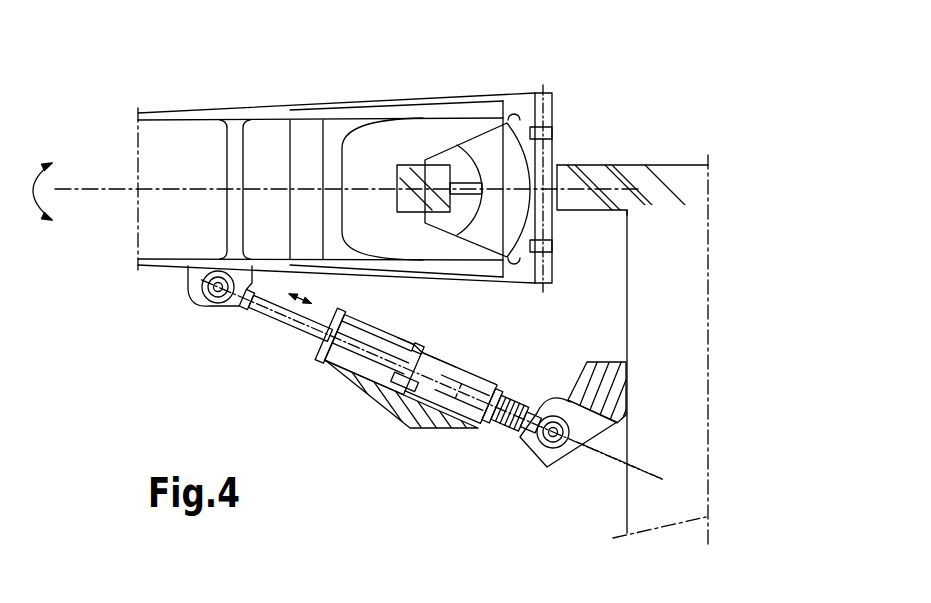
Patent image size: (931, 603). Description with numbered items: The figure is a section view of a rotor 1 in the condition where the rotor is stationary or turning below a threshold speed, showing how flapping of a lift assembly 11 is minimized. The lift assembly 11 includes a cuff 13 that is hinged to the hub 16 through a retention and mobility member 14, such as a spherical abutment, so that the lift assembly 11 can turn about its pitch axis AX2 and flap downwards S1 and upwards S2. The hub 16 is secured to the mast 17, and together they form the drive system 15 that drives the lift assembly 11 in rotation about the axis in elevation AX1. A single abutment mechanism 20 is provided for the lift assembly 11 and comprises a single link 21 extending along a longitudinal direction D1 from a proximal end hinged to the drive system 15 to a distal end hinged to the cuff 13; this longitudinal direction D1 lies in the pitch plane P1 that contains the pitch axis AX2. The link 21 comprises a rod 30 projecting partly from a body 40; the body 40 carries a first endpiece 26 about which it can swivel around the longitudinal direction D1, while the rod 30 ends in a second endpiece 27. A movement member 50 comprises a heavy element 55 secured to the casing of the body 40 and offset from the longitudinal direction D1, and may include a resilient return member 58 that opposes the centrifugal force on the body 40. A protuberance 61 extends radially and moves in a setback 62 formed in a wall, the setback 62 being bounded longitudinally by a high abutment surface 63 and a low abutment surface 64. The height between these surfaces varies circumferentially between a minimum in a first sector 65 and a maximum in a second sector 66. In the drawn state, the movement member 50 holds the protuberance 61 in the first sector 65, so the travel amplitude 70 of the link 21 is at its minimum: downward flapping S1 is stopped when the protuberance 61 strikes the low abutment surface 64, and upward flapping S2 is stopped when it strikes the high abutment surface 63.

The lighting device 1 is at (744, 136).
The lift assembly 11 is at (174, 106).
The cuff 13 is at (232, 112).
The retention and mobility member 14 is at (458, 126).
The drive system 15 is at (660, 135).
The hub 16 is at (605, 163).
The mast 17 is at (633, 507).
The abutment mechanism 20 is at (383, 403).
The single link 21 is at (374, 431).
The first endpiece 26 is at (577, 458).
The second endpiece 27 is at (203, 307).
The rod 30 is at (262, 313).
The body 40 is at (495, 371).
The movement member 50 is at (429, 424).
The heavy element 55 is at (437, 430).
The resilient return member 58 is at (502, 439).
The protuberance 61 is at (410, 396).
The setback 62 is at (399, 373).
The first sector 65 is at (417, 353).
The second sector 66 is at (372, 377).
The high abutment surface 63 is at (405, 350).
The low abutment surface 64 is at (445, 356).
The travel amplitude 70 is at (312, 301).
The axis in elevation AX1 is at (709, 475).
The pitch axis AX2 is at (120, 188).
The longitudinal direction D1 is at (642, 468).
The pitch plane P1 is at (155, 299).
The downward flapping movement S1 is at (37, 235).
The upward flapping movement S2 is at (37, 174).